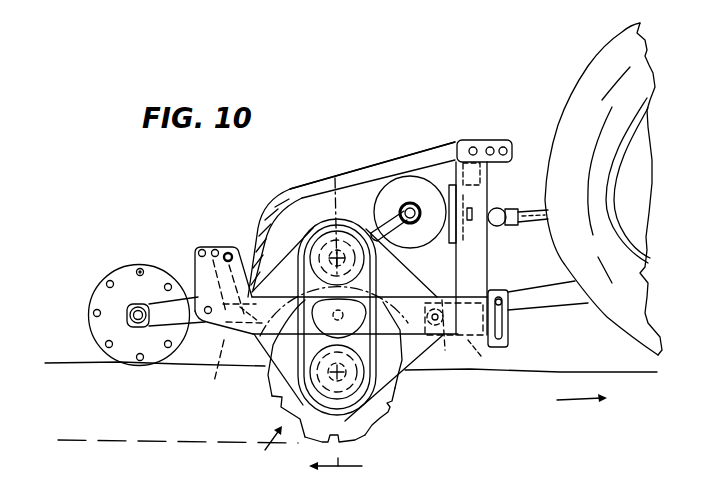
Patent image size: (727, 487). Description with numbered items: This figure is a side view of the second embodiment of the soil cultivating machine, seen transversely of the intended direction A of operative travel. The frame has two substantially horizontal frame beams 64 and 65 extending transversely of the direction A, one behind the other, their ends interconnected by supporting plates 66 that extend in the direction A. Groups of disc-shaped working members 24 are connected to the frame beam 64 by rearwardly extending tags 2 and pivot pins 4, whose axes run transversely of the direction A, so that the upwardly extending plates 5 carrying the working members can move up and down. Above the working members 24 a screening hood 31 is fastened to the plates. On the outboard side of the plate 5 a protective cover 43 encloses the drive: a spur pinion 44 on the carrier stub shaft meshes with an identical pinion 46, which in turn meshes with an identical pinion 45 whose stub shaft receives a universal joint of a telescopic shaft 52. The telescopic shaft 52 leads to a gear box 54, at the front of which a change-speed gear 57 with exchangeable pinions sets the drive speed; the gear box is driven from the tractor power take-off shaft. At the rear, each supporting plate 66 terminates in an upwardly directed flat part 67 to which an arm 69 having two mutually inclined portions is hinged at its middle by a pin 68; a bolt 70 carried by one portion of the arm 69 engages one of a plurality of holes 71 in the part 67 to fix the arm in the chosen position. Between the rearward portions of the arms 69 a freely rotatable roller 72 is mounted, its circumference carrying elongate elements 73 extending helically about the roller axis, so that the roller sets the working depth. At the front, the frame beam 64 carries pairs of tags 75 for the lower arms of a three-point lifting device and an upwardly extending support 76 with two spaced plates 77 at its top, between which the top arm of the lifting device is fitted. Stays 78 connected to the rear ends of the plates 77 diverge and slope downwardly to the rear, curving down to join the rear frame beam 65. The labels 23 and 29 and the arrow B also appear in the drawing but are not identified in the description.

The tags 2 is at (444, 297).
The pivot pins 4 is at (446, 337).
The plates 5 is at (412, 278).
The tines 23 is at (278, 417).
The working members 24 is at (265, 448).
The rotor 29 is at (277, 404).
The screening hood 31 is at (401, 303).
The protective cover 43 is at (306, 230).
The spur pinion 44 is at (400, 387).
The pinion 45 is at (335, 178).
The pinion 46 is at (301, 287).
The telescopic shaft 52 is at (388, 218).
The gear box 54 is at (409, 180).
The change-speed gear 57 is at (493, 195).
The frame beam 64 is at (485, 355).
The frame beam 65 is at (216, 366).
The supporting plates 66 is at (237, 311).
The flat part 67 is at (215, 246).
The pin 68 is at (207, 316).
The arm 69 is at (165, 304).
The bolt 70 is at (231, 253).
The holes 71 is at (118, 266).
The roller 72 is at (86, 331).
The elongate elements 73 is at (104, 284).
The tags 75 is at (510, 290).
The support 76 is at (467, 198).
The plates 77 is at (478, 139).
The stays 78 is at (392, 158).
The direction of operative travel A is at (571, 404).
The direction of rotation B is at (335, 458).